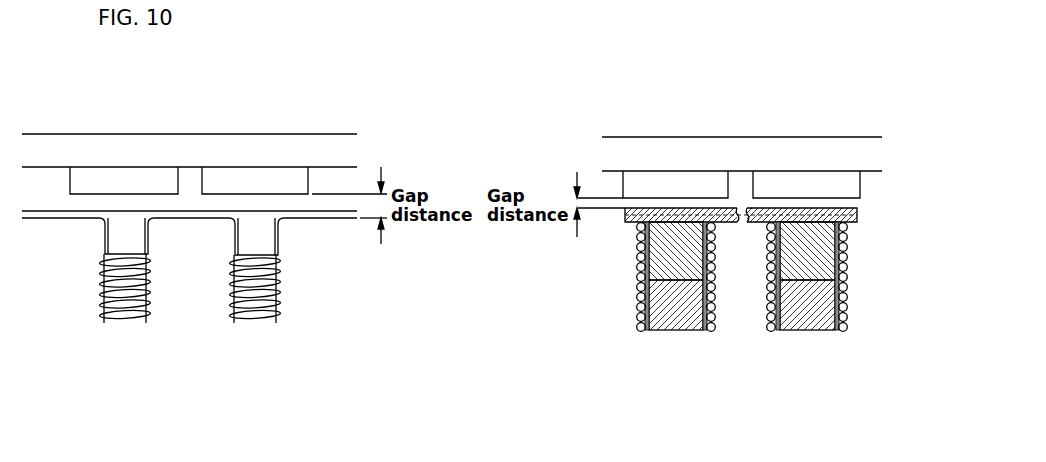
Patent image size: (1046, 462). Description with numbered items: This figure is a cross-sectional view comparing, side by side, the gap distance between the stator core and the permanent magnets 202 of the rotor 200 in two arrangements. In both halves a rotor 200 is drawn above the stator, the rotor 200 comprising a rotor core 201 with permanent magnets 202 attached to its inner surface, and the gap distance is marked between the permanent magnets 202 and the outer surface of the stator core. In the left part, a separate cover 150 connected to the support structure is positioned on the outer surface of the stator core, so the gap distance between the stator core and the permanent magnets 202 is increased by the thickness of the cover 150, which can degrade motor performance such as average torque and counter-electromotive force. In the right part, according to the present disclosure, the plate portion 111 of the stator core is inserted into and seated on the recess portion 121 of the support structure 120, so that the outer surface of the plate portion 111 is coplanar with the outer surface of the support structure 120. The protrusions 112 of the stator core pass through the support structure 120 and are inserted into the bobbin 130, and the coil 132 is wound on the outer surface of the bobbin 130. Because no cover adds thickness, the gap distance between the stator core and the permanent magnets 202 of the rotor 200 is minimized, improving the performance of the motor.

The plate portion 111 is at (840, 209).
The protrusions 112 is at (823, 252).
The support structure 120 is at (624, 217).
The recess portion 121 is at (650, 219).
The bobbin 130 is at (648, 321).
The coil 132 is at (645, 292).
The cover 150 is at (80, 213).
The rotor 200 is at (147, 134).
The rotor core 201 is at (219, 156).
The permanent magnets 202 is at (265, 177).